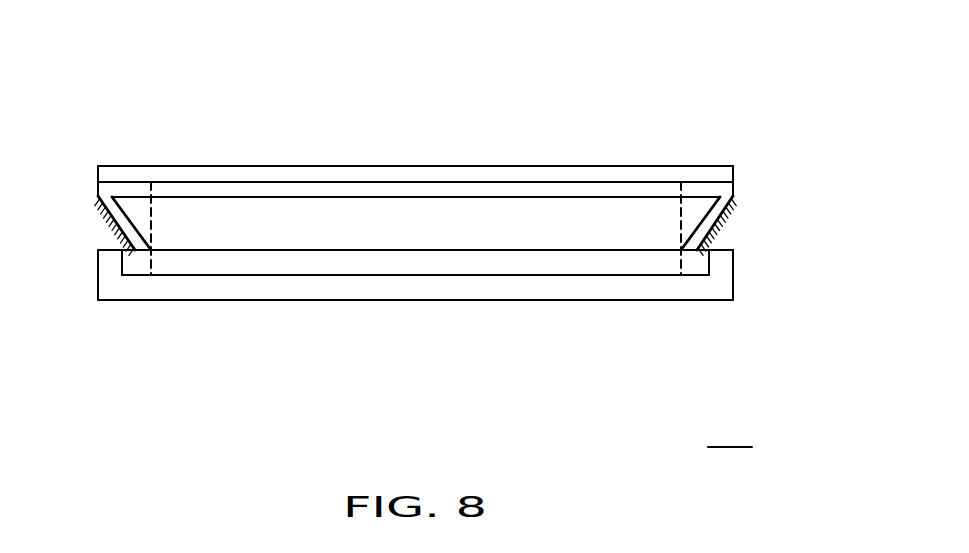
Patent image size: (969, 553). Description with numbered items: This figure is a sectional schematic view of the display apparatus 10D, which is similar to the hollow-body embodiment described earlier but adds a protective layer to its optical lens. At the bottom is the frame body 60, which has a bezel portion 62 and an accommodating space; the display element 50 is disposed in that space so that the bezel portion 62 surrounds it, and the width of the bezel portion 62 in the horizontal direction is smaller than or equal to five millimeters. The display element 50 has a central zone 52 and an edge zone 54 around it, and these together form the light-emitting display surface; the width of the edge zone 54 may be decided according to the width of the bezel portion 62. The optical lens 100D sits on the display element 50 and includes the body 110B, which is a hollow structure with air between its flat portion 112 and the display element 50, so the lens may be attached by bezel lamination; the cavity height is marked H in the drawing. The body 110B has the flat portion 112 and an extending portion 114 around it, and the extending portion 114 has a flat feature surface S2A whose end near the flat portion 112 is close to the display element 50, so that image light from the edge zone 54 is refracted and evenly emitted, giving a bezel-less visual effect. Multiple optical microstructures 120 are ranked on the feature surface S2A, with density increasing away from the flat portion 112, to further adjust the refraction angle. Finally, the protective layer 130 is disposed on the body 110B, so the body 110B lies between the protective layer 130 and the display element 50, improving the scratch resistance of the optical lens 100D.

The optical lens 100D is at (188, 128).
The protective layer 130 is at (570, 175).
The body 110B is at (280, 175).
The flat portion 112 is at (368, 190).
The extending portion 114 is at (131, 188).
The optical microstructures 120 is at (116, 233).
The feature surface S2A is at (105, 221).
The hollow cavity H is at (433, 217).
The display element 50 is at (588, 273).
The central zone 52 is at (358, 268).
The edge zone 54 is at (125, 262).
The bezel portion 62 is at (103, 290).
The frame body 60 is at (442, 290).
The display apparatus 10D is at (730, 430).